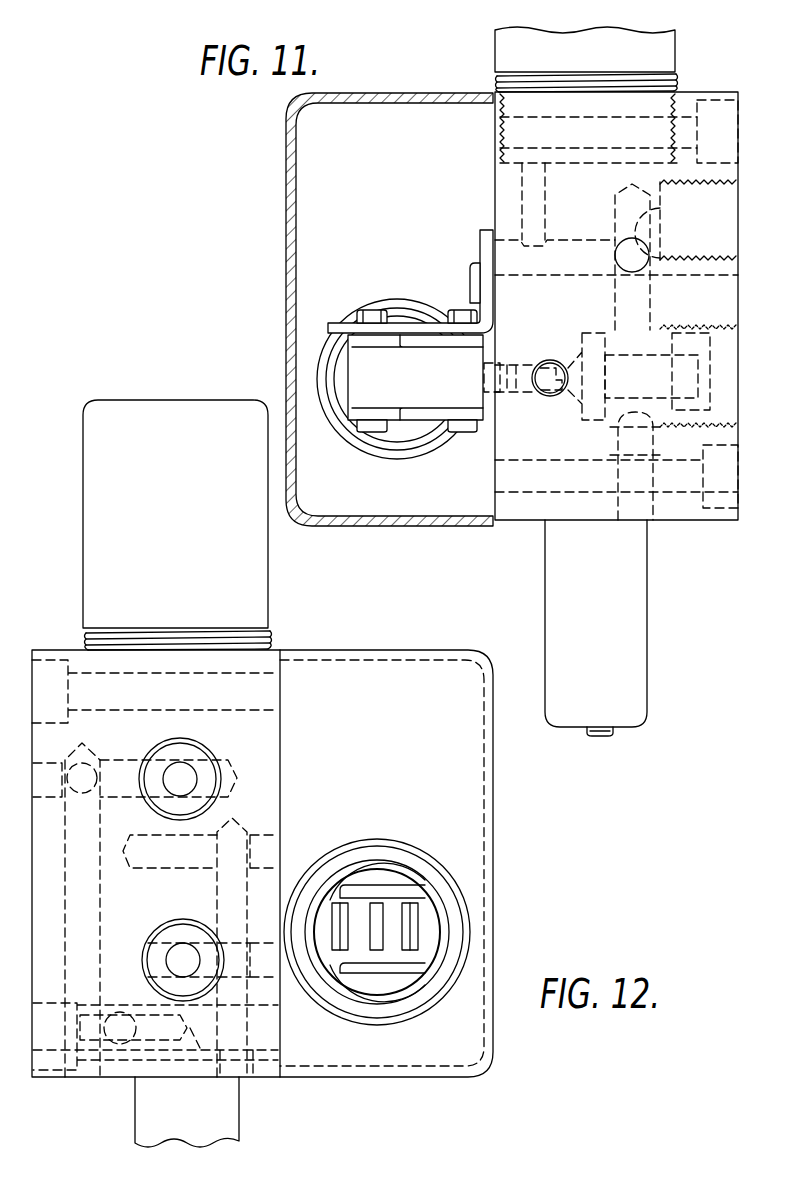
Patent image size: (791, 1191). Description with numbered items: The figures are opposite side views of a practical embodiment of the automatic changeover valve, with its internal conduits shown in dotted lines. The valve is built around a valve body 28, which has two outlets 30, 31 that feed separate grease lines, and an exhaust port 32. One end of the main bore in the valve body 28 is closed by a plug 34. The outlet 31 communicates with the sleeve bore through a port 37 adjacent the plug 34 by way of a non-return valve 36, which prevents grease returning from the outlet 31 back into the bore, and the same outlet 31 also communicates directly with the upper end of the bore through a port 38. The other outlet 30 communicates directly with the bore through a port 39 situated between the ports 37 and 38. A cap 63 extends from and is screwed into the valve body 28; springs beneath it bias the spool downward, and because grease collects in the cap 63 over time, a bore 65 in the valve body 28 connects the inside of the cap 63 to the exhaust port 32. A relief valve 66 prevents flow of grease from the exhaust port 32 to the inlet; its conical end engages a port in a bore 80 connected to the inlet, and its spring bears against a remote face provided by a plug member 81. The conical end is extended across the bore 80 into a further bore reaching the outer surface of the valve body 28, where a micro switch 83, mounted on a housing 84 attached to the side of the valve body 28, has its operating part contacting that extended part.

In FIG. 11, the valve body 28 is at (722, 522).
In FIG. 12, the outlet 30 is at (212, 944).
In FIG. 12, the outlet 31 is at (217, 757).
In FIG. 11, the exhaust port 32 is at (713, 193).
In FIG. 11, the plug 34 is at (638, 599).
In FIG. 12, the plug 34 is at (225, 1124).
In FIG. 12, the non-return valve 36 is at (120, 1013).
In FIG. 12, the port 37 is at (200, 1048).
In FIG. 12, the port 38 is at (184, 772).
In FIG. 12, the port 39 is at (189, 858).
In FIG. 11, the cap 63 is at (507, 48).
In FIG. 12, the cap 63 is at (253, 581).
In FIG. 11, the bore 65 is at (547, 201).
In FIG. 11, the relief valve 66 is at (687, 356).
In FIG. 11, the bore 80 is at (560, 396).
In FIG. 11, the plug member 81 is at (727, 407).
In FIG. 11, the micro switch 83 is at (435, 444).
In FIG. 12, the micro switch 83 is at (427, 1007).
In FIG. 11, the housing 84 is at (490, 527).
In FIG. 12, the housing 84 is at (497, 917).